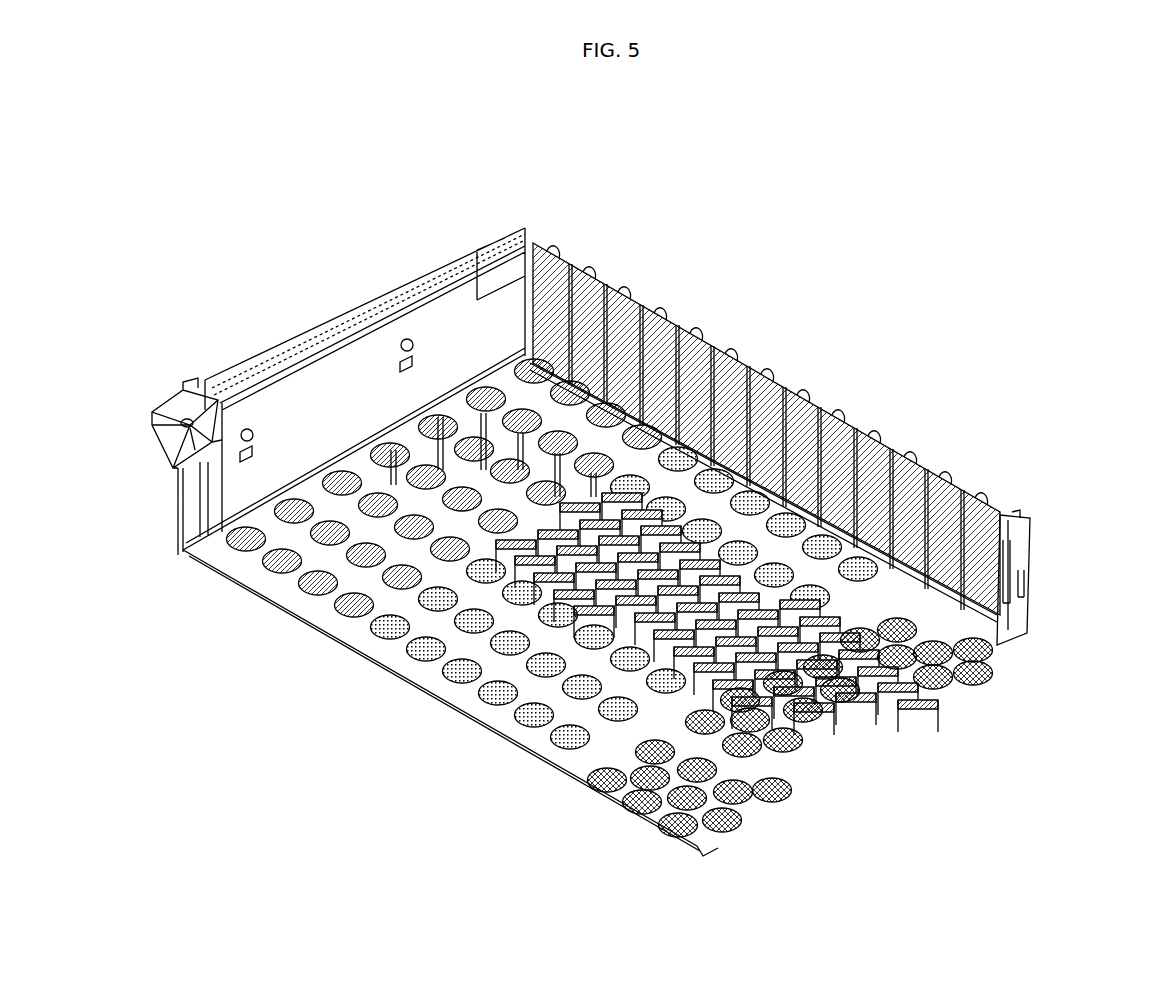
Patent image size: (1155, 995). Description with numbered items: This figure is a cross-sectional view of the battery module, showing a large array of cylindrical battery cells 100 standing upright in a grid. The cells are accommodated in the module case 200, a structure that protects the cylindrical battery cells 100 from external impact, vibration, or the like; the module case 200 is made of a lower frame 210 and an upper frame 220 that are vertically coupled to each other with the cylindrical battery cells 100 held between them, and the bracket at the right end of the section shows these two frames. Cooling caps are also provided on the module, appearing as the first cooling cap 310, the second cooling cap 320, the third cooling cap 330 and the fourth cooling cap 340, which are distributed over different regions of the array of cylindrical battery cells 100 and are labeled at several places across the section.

The cylindrical battery cells 100 is at (618, 290).
The module case 200 is at (1076, 577).
The lower frame 210 is at (1023, 612).
The upper frame 220 is at (1023, 553).
The first cooling cap 310 is at (868, 747).
The second cooling cap 320 is at (323, 587).
The third cooling cap 330 is at (842, 417).
The fourth cooling cap 340 is at (985, 640).